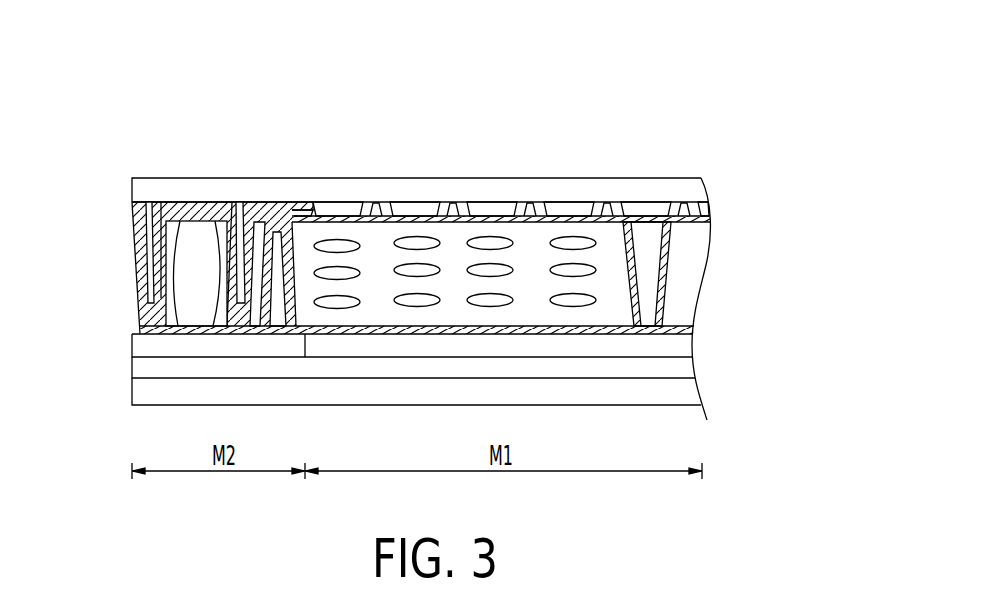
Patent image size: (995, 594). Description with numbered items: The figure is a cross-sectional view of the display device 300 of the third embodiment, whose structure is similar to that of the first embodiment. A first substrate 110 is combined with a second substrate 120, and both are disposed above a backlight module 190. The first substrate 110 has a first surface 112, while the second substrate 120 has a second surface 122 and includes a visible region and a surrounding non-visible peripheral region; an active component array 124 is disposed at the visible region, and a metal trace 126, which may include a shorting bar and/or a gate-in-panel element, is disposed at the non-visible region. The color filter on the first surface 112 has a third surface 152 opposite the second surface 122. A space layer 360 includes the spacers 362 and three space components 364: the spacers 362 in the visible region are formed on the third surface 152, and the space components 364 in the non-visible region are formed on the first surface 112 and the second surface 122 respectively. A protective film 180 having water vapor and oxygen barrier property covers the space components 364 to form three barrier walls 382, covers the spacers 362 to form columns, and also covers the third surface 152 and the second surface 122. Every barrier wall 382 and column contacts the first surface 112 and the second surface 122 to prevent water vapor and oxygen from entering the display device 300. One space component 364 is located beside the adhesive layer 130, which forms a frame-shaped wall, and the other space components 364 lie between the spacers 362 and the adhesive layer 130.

The display device 300 is at (404, 244).
The first substrate 110 is at (134, 186).
The first surface 112 is at (148, 211).
The second substrate 120 is at (141, 368).
The second surface 122 is at (682, 331).
The active component array 124 is at (675, 345).
The metal trace 126 is at (142, 345).
The adhesive layer 130 is at (195, 242).
The third surface 152 is at (686, 217).
The protective film 180 is at (146, 268).
The backlight module 190 is at (144, 394).
The space layer 360 is at (350, 265).
The spacers 362 is at (645, 238).
The space components 364 is at (150, 234).
The barrier walls 382 is at (298, 309).